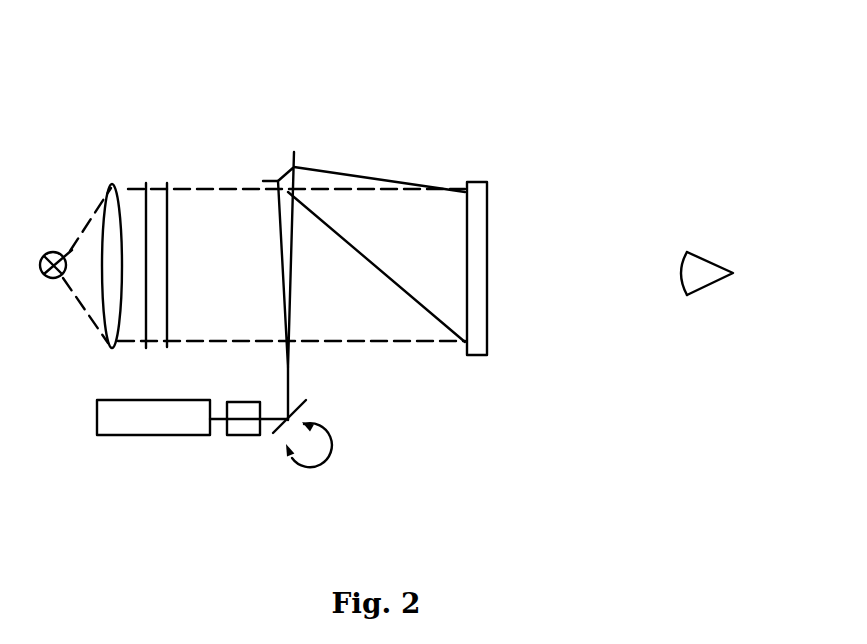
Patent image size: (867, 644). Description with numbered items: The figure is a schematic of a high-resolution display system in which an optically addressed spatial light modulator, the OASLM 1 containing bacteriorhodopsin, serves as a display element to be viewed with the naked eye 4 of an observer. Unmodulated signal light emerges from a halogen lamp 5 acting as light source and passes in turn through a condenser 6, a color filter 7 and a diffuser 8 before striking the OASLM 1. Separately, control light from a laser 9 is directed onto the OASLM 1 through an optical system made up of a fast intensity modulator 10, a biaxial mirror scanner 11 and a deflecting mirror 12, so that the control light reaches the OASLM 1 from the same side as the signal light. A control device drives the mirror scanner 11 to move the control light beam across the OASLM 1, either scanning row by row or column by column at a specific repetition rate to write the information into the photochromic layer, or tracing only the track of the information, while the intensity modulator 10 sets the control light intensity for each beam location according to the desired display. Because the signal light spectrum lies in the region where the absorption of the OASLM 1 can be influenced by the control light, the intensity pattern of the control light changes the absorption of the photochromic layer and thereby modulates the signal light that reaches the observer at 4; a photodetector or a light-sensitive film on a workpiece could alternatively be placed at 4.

The OASLM 1 is at (485, 172).
The eye 4 is at (725, 257).
The halogen lamp 5 is at (52, 243).
The condenser 6 is at (103, 182).
The color filter 7 is at (152, 173).
The diffuser 8 is at (177, 173).
The laser 9 is at (130, 442).
The intensity modulator 10 is at (252, 443).
The biaxial mirror scanner 11 is at (315, 393).
The deflecting mirror 12 is at (278, 164).